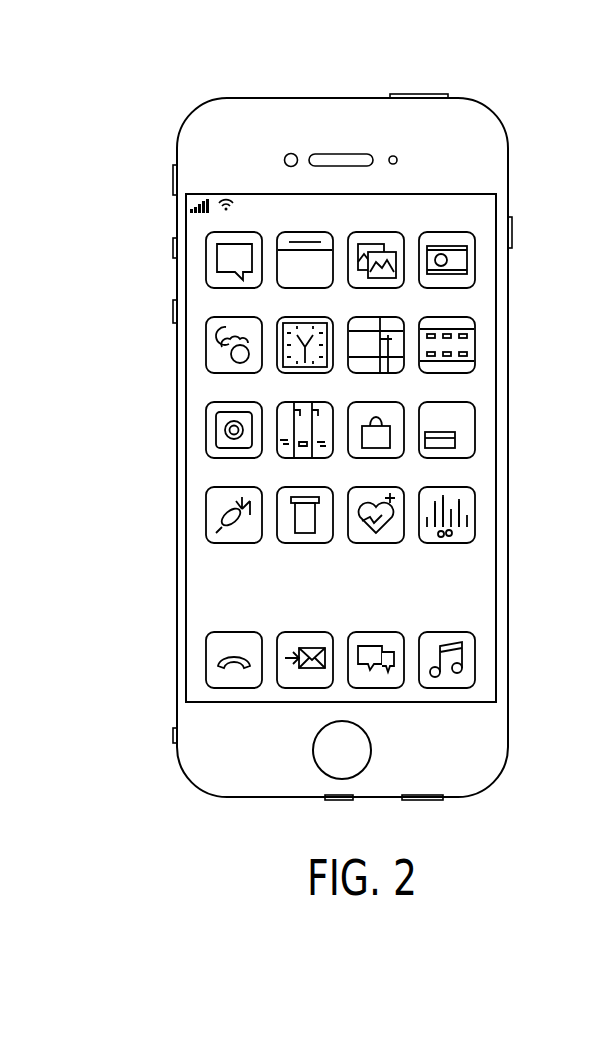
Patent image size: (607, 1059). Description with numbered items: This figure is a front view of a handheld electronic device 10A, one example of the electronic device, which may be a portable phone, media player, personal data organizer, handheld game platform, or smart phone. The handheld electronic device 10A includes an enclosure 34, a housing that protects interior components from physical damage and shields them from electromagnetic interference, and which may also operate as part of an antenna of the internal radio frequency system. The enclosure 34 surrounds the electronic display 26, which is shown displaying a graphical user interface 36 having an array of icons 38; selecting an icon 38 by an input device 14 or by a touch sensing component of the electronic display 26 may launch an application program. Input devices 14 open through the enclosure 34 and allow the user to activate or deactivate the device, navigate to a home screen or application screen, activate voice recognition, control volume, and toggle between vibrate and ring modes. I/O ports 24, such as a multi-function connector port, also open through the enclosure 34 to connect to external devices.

The handheld electronic device 10A is at (160, 82).
The input devices 14 is at (418, 94).
The I/O ports 24 is at (230, 800).
The electronic display 26 is at (496, 577).
The enclosure 34 is at (508, 178).
The graphical user interface 36 is at (480, 385).
The icons 38 is at (362, 532).